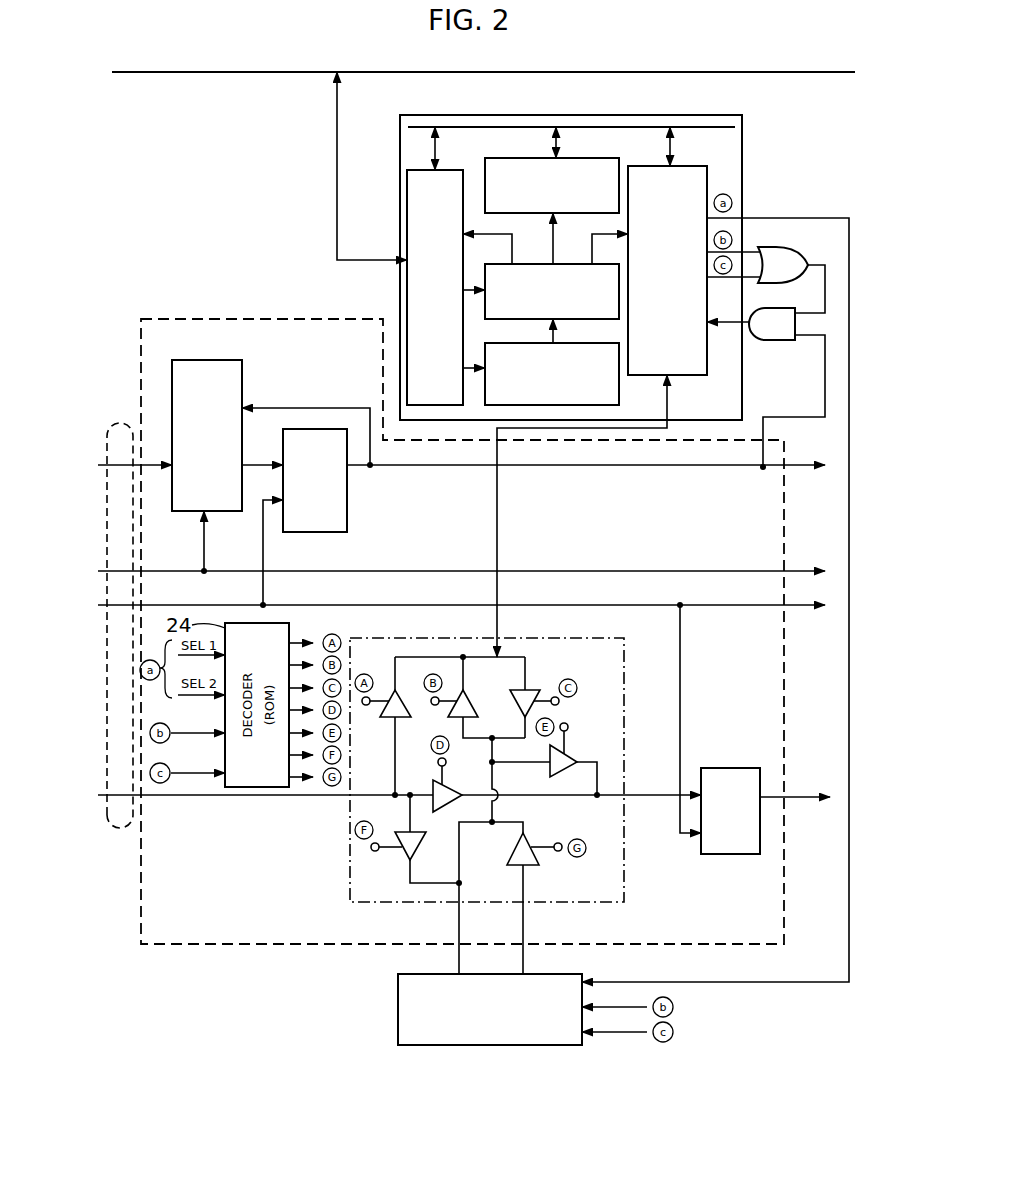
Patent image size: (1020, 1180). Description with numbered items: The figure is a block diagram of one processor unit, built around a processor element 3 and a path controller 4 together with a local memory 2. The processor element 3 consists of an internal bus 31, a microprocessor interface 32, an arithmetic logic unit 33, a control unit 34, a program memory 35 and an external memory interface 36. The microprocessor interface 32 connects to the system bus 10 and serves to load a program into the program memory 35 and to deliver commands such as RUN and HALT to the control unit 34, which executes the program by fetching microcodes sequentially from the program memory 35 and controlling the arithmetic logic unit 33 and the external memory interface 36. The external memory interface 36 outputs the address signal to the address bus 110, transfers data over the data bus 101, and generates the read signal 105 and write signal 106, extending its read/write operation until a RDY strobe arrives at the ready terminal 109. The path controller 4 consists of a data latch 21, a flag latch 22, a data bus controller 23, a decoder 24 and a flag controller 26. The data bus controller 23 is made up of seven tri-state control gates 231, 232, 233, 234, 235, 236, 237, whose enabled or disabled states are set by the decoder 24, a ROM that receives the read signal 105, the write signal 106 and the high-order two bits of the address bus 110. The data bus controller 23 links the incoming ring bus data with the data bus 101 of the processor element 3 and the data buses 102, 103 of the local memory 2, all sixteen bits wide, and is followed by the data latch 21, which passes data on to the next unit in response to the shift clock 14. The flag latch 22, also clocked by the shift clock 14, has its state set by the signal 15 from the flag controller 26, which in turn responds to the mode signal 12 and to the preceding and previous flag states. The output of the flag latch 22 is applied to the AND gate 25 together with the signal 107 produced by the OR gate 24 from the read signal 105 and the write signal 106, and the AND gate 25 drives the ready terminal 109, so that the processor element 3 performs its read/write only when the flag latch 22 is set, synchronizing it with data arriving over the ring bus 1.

The ring bus 1 is at (121, 826).
The local memory 2 is at (398, 1006).
The processor element 3 is at (627, 115).
The path controller 4 is at (232, 319).
The system bus 10 is at (257, 71).
The mode signal 12 is at (178, 569).
The shift clock 14 is at (180, 605).
The signal 15 is at (256, 463).
The data latch 21 is at (723, 768).
The flag latch 22 is at (325, 429).
The data bus controller 23 is at (636, 633).
The decoder 24 is at (801, 248).
The AND gate 25 is at (795, 341).
The flag controller 26 is at (245, 375).
The internal bus 31 is at (516, 128).
The microprocessor interface 32 is at (407, 185).
The arithmetic logic unit 33 is at (600, 158).
The control unit 34 is at (573, 262).
The program memory 35 is at (619, 393).
The external memory interface 36 is at (688, 166).
The data bus 101 is at (498, 512).
The data bus 102 is at (459, 928).
The data bus 103 is at (523, 921).
The read signal 105 is at (761, 282).
The write signal 106 is at (760, 248).
The signal 107 is at (825, 291).
The ready terminal 109 is at (740, 326).
The address bus 110 is at (848, 492).
The tri-state control gate 231 is at (394, 720).
The tri-state control gate 232 is at (470, 706).
The tri-state control gate 233 is at (530, 690).
The tri-state control gate 234 is at (450, 782).
The tri-state control gate 235 is at (570, 746).
The tri-state control gate 236 is at (402, 860).
The tri-state control gate 237 is at (538, 867).